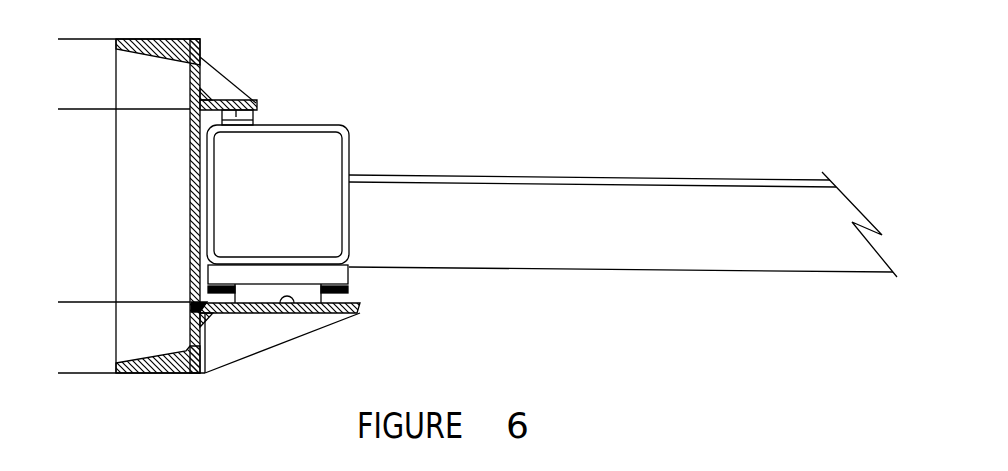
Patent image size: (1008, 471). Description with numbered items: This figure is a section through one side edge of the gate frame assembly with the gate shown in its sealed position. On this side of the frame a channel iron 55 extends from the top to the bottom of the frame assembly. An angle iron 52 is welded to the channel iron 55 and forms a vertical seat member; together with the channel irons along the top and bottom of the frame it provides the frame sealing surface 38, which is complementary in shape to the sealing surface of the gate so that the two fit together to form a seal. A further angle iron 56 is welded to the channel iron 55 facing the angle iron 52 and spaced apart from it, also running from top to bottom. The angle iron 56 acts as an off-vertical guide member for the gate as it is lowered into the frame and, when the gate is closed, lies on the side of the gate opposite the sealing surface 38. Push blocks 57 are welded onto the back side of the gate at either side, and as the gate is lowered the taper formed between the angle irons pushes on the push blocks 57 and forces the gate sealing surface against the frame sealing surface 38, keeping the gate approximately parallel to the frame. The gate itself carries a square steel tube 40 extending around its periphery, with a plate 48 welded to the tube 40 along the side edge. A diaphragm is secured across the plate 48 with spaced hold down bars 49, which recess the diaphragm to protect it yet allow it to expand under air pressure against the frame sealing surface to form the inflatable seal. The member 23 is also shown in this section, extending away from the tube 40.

The beam 23 is at (492, 178).
The frame sealing surface 38 is at (298, 310).
The square steel tube 40 is at (343, 124).
The plate 48 is at (336, 278).
The hold down bar 49 is at (340, 298).
The angle iron 52 is at (335, 315).
The channel iron 55 is at (160, 56).
The angle iron 56 is at (256, 108).
The push block 57 is at (254, 106).